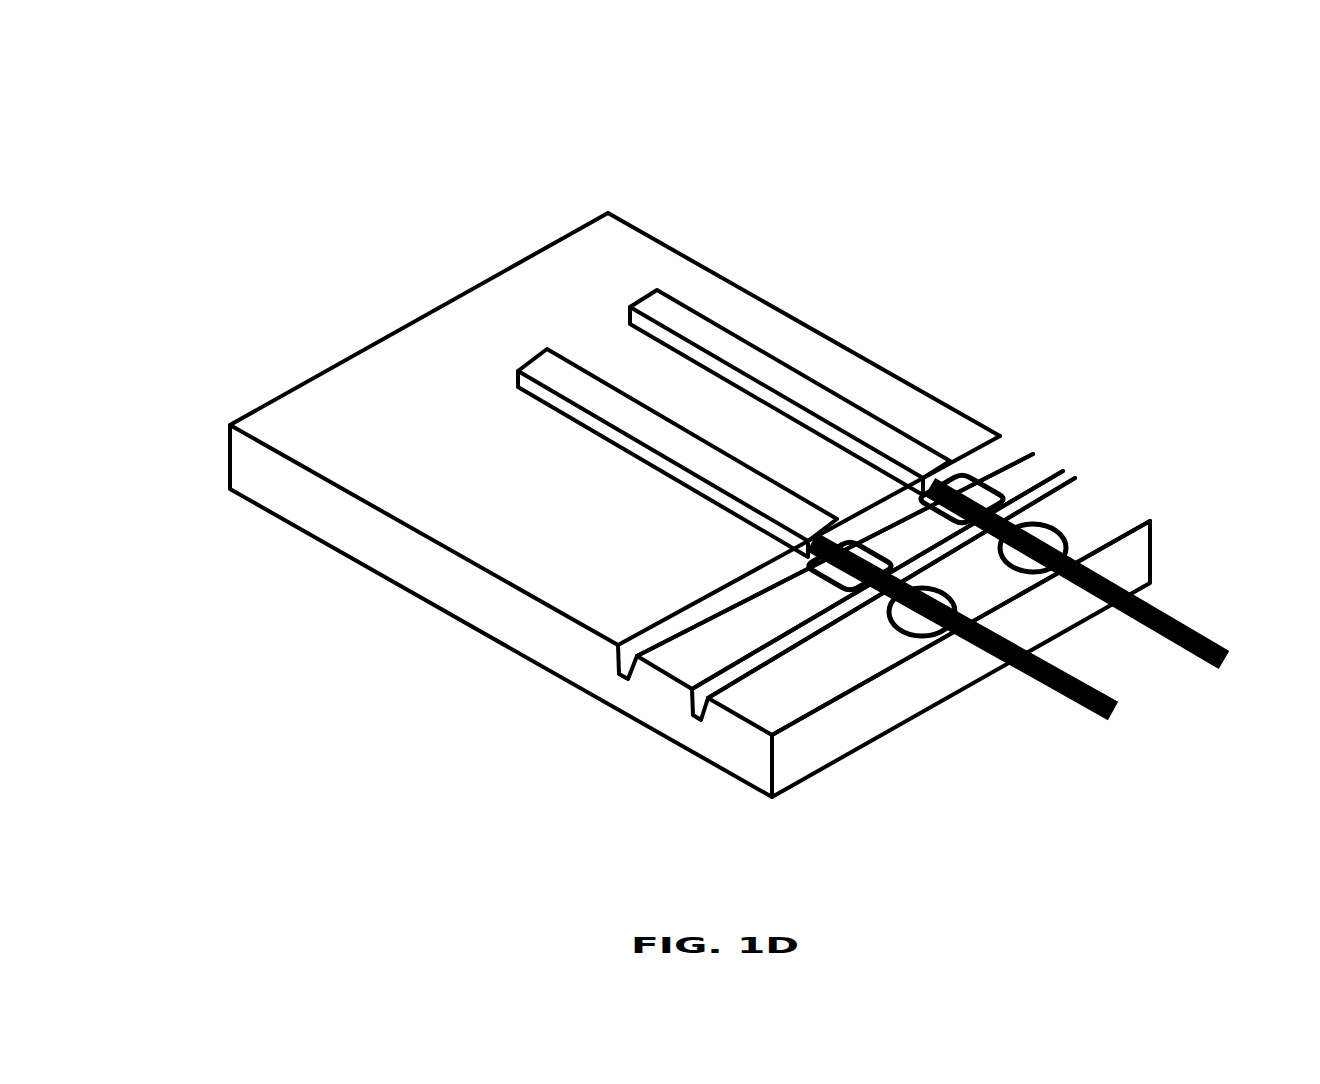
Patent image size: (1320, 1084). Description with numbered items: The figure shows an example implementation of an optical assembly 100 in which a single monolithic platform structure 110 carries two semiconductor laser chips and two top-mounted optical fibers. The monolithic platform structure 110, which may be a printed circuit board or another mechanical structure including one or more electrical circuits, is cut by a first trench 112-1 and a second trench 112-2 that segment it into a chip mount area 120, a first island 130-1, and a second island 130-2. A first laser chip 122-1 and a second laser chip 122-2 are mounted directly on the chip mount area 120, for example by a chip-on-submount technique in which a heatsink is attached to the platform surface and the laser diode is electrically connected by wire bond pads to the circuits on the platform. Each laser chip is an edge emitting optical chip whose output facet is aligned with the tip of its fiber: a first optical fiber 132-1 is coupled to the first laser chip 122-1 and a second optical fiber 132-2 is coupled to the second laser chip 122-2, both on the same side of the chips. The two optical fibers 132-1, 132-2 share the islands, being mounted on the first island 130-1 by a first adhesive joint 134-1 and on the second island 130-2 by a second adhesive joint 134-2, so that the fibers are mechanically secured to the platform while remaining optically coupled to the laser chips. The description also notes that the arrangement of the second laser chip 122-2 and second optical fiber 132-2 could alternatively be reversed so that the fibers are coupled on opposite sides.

The optical assembly 100 is at (214, 68).
The monolithic platform structure 110 is at (360, 568).
The chip mount area 120 is at (809, 346).
The first trench 112-1 is at (1003, 436).
The second trench 112-2 is at (1076, 474).
The first island 130-1 is at (1038, 452).
The second island 130-2 is at (1124, 498).
The first laser chip 122-1 is at (615, 452).
The second laser chip 122-2 is at (722, 322).
The first optical fiber 132-1 is at (1086, 722).
The second optical fiber 132-2 is at (1208, 668).
The first adhesive joint 134-1 is at (808, 578).
The second adhesive joint 134-2 is at (920, 640).